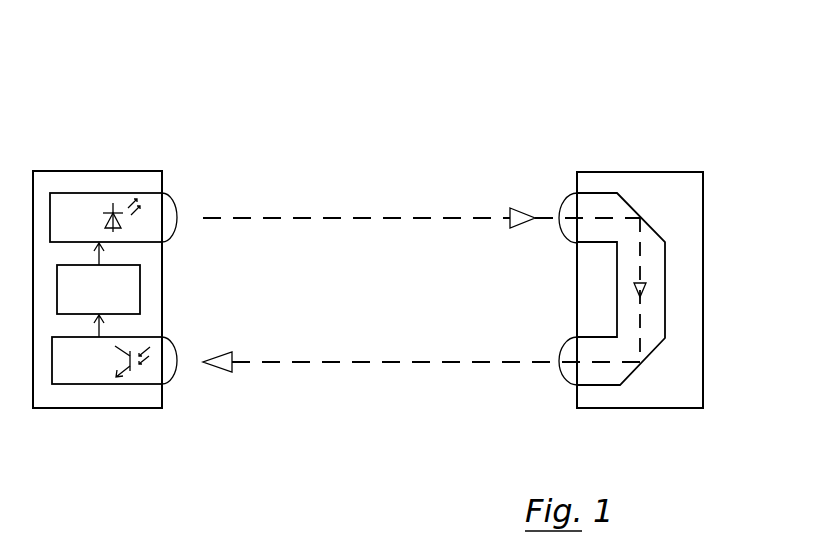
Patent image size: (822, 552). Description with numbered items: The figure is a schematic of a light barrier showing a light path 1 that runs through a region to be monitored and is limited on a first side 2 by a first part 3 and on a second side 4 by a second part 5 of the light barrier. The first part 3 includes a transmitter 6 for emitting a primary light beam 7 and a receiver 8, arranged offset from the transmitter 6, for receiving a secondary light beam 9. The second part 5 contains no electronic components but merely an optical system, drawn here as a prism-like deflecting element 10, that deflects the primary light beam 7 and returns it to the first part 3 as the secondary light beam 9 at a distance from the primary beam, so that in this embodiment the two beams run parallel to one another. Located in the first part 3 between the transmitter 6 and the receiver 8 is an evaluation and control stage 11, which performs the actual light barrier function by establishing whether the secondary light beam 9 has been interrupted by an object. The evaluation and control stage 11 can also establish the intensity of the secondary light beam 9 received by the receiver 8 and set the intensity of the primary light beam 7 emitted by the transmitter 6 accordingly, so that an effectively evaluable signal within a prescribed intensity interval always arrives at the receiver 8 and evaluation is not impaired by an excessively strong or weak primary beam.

The light path 1 is at (354, 176).
The first side 2 is at (88, 140).
The first part 3 is at (68, 408).
The second side 4 is at (640, 130).
The second part 5 is at (693, 408).
The transmitter 6 is at (83, 205).
The primary light beam 7 is at (435, 213).
The receiver 8 is at (101, 377).
The secondary light beam 9 is at (375, 362).
The prism reflector 10 is at (670, 287).
The evaluation and control stage 11 is at (141, 288).